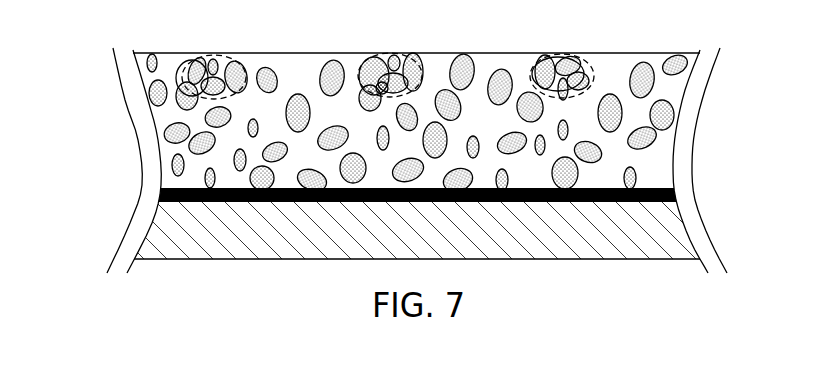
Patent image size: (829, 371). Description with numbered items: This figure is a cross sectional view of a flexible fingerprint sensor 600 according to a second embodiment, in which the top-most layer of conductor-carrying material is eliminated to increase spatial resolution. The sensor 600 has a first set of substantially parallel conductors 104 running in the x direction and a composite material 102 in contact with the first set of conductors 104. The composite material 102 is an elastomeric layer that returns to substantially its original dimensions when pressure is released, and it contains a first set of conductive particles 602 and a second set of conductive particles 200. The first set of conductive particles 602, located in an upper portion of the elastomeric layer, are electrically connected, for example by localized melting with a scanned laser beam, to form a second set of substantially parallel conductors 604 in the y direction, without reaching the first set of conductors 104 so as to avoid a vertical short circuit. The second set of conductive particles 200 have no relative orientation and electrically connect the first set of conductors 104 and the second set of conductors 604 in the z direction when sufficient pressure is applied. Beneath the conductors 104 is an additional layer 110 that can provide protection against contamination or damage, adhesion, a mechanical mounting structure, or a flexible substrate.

The flexible fingerprint sensor 600 is at (112, 172).
The first set of conductive particles 602 is at (205, 78).
The second set of substantially parallel conductors 604 is at (222, 57).
The second set of conductive particles 200 is at (177, 133).
The composite material 102 is at (413, 123).
The first set of substantially parallel conductors 104 is at (677, 191).
The additional layer 110 is at (167, 228).